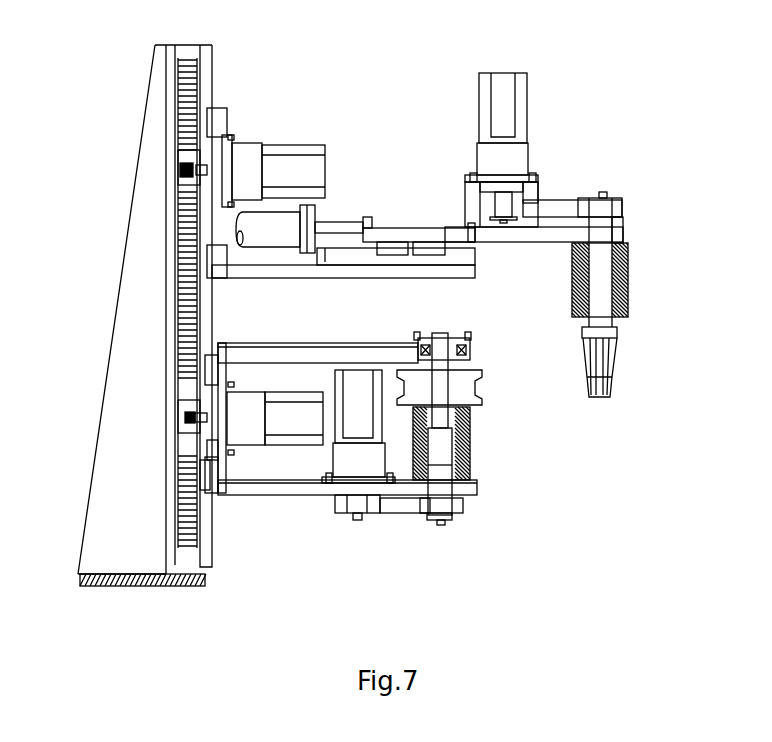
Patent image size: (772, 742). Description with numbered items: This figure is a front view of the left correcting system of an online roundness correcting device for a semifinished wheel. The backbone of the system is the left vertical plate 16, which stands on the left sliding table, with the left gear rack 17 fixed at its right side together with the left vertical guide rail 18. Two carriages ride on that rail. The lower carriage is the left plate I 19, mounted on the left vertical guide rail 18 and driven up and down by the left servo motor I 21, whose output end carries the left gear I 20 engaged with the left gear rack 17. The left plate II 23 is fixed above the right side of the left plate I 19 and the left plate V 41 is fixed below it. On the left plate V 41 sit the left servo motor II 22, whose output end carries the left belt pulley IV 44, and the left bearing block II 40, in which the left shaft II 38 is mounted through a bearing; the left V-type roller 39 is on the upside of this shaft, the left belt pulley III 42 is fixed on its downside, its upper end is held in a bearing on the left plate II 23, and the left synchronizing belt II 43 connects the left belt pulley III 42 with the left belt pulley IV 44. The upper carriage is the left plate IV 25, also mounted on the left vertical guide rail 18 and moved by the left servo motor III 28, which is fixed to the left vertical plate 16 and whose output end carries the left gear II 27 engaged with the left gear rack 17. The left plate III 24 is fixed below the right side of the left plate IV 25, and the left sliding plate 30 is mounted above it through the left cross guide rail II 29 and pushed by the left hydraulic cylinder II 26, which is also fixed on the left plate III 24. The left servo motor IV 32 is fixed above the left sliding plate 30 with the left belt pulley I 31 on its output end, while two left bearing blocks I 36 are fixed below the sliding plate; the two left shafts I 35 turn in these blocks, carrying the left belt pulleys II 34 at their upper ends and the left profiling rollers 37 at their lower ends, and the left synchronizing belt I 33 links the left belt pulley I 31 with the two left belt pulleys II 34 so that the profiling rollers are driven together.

The left vertical plate 16 is at (165, 543).
The left gear rack 17 is at (183, 503).
The left vertical guide rail 18 is at (203, 470).
The left plate I 19 is at (213, 448).
The left gear I 20 is at (183, 430).
The left servo motor I 21 is at (243, 413).
The left servo motor II 22 is at (353, 428).
The left plate II 23 is at (260, 355).
The left plate III 24 is at (250, 272).
The left plate IV 25 is at (213, 255).
The left hydraulic cylinder II 26 is at (262, 227).
The left gear II 27 is at (187, 182).
The left servo motor III 28 is at (247, 157).
The left cross guide rail II 29 is at (355, 255).
The left sliding plate 30 is at (400, 237).
The left belt pulley I 31 is at (466, 172).
The left servo motor IV 32 is at (497, 152).
The left synchronizing belt I 33 is at (560, 205).
The left belt pulley II 34 is at (585, 198).
The left shaft I 35 is at (600, 238).
The left bearing block I 36 is at (627, 245).
The left profiling roller 37 is at (603, 353).
The left shaft II 38 is at (444, 353).
The left V-type roller 39 is at (466, 387).
The left bearing block II 40 is at (468, 430).
The left plate V 41 is at (463, 492).
The left belt pulley III 42 is at (458, 508).
The left synchronizing belt II 43 is at (398, 510).
The left belt pulley IV 44 is at (348, 508).